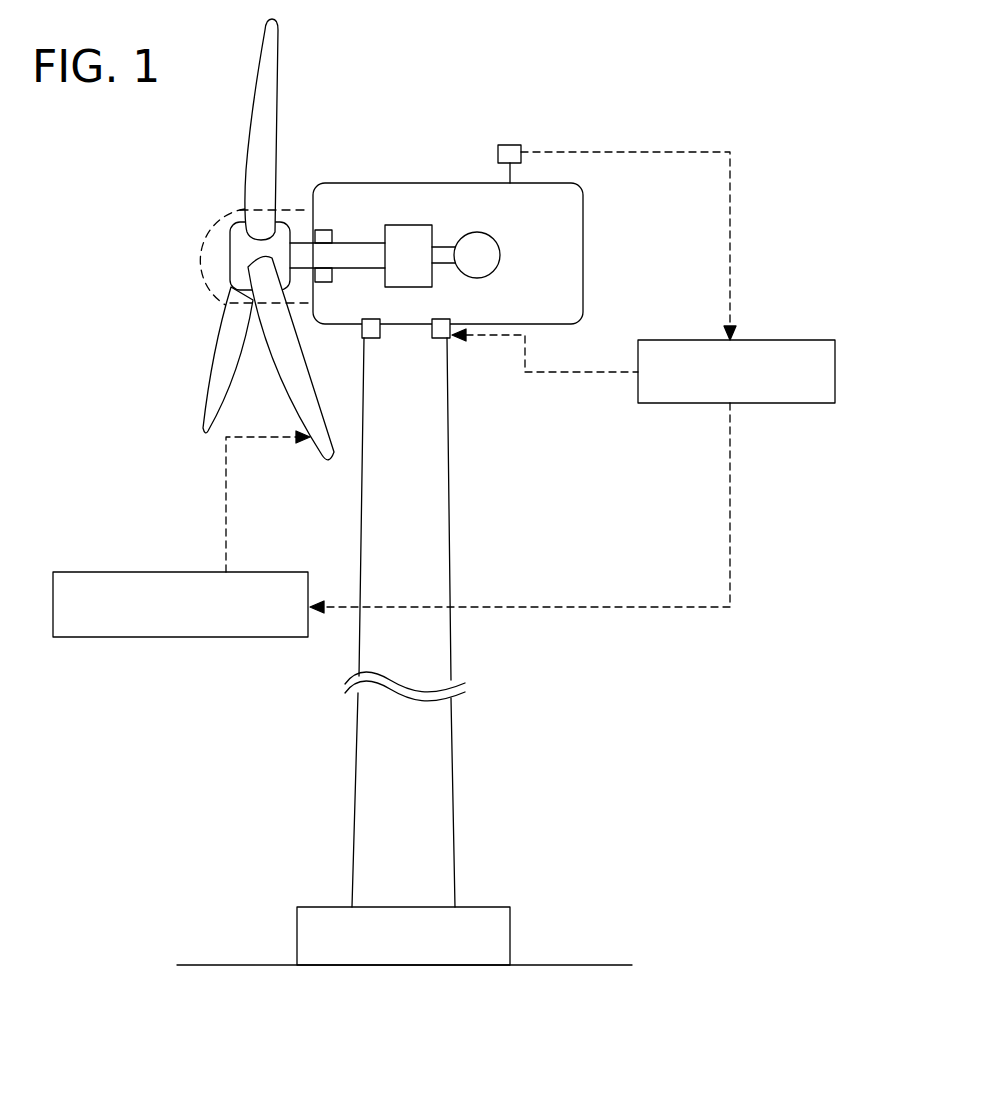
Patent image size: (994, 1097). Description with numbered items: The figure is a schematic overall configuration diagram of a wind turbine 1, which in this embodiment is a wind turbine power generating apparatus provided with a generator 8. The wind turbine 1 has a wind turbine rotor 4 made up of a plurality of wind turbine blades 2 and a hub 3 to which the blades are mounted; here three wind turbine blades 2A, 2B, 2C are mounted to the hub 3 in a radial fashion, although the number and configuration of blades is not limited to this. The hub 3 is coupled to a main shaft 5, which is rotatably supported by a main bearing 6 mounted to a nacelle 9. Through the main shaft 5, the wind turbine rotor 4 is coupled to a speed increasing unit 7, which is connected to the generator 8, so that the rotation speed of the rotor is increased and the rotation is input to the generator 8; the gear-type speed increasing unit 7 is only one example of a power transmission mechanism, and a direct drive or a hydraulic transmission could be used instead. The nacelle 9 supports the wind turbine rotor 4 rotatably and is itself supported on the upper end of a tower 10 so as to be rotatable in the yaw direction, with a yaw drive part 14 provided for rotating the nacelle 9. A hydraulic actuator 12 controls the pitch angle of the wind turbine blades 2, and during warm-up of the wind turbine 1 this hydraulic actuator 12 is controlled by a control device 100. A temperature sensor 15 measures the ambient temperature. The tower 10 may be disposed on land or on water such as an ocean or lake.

The wind turbine 1 is at (817, 123).
The wind turbine blades 2 is at (224, 257).
The wind turbine blade 2A is at (250, 103).
The wind turbine blade 2B is at (203, 387).
The wind turbine blade 2C is at (316, 448).
The hub 3 is at (230, 254).
The wind turbine rotor 4 is at (201, 217).
The main shaft 5 is at (350, 243).
The main bearing 6 is at (323, 230).
The speed increasing unit 7 is at (415, 225).
The generator 8 is at (466, 234).
The nacelle 9 is at (583, 213).
The tower 10 is at (449, 512).
The hydraulic actuator 12 is at (140, 637).
The yaw drive part 14 is at (449, 338).
The temperature sensor 15 is at (513, 145).
The control device 100 is at (838, 365).